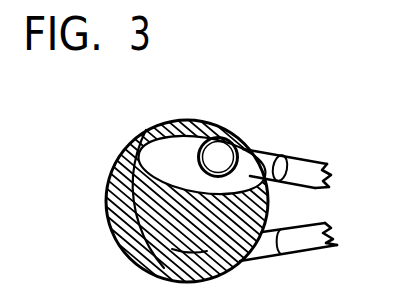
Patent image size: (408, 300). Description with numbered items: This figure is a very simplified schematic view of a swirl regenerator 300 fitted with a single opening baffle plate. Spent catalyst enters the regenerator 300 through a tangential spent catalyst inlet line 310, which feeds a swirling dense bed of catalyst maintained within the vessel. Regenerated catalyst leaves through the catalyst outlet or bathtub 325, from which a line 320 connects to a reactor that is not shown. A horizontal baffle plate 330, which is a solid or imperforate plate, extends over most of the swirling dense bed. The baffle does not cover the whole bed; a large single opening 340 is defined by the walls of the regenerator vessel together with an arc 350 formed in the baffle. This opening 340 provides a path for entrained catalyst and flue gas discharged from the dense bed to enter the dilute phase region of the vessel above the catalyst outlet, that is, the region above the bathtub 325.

The swirl regenerator 300 is at (107, 215).
The tangential spent catalyst inlet line 310 is at (260, 262).
The line connecting to a reactor 320 is at (301, 157).
The catalyst outlet or bathtub 325 is at (220, 138).
The horizontal baffle plate 330 is at (118, 162).
The large single opening 340 is at (192, 128).
The arc in the baffle 350 is at (145, 133).